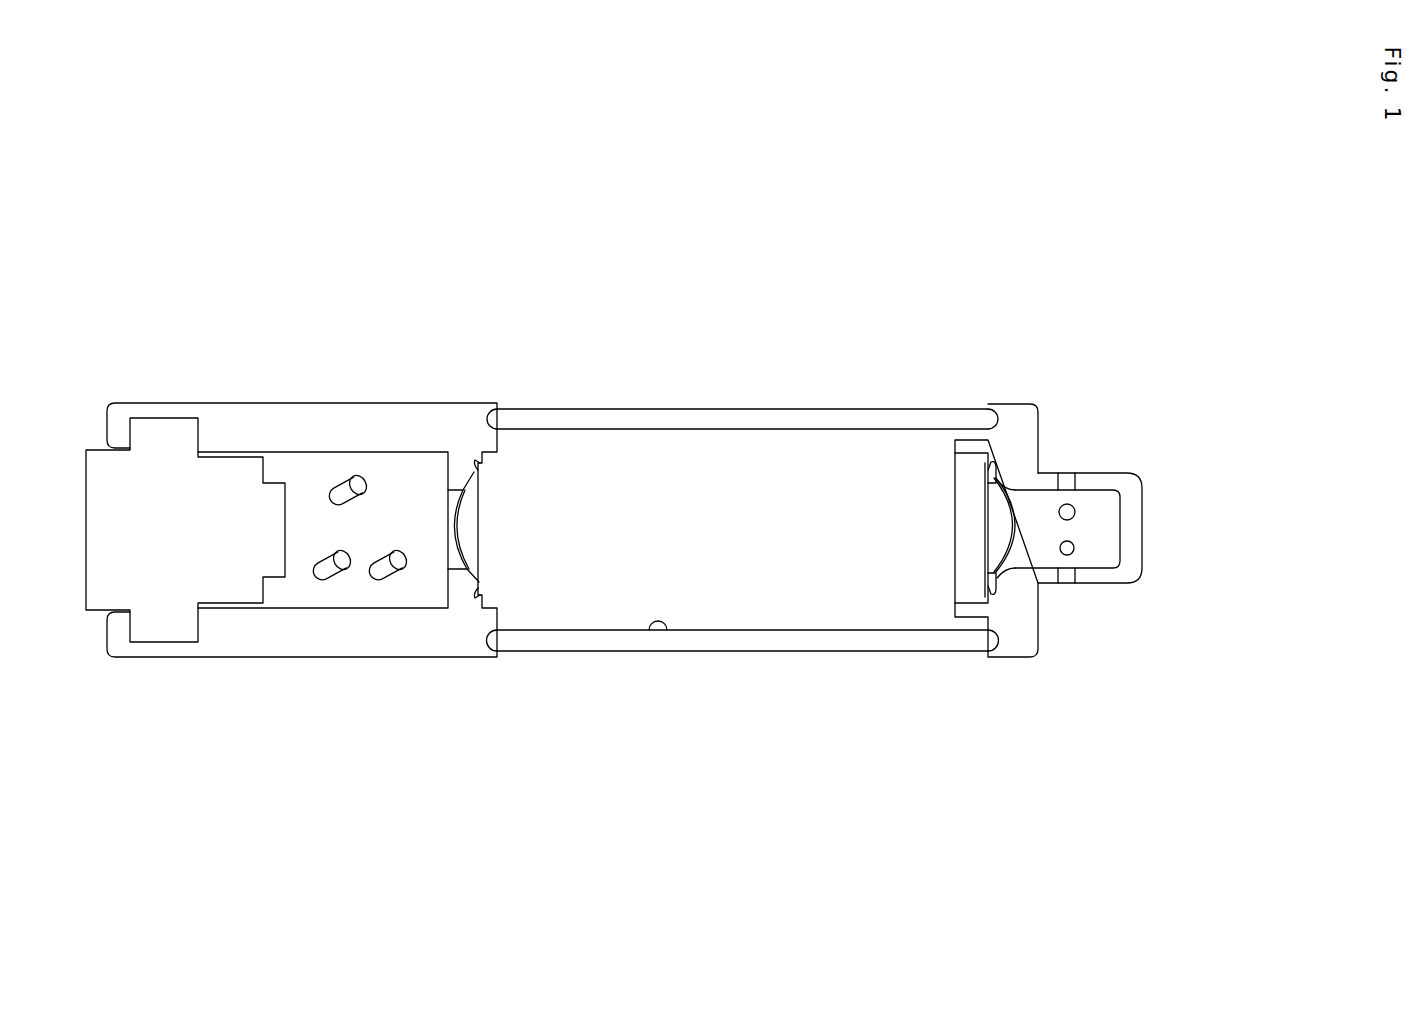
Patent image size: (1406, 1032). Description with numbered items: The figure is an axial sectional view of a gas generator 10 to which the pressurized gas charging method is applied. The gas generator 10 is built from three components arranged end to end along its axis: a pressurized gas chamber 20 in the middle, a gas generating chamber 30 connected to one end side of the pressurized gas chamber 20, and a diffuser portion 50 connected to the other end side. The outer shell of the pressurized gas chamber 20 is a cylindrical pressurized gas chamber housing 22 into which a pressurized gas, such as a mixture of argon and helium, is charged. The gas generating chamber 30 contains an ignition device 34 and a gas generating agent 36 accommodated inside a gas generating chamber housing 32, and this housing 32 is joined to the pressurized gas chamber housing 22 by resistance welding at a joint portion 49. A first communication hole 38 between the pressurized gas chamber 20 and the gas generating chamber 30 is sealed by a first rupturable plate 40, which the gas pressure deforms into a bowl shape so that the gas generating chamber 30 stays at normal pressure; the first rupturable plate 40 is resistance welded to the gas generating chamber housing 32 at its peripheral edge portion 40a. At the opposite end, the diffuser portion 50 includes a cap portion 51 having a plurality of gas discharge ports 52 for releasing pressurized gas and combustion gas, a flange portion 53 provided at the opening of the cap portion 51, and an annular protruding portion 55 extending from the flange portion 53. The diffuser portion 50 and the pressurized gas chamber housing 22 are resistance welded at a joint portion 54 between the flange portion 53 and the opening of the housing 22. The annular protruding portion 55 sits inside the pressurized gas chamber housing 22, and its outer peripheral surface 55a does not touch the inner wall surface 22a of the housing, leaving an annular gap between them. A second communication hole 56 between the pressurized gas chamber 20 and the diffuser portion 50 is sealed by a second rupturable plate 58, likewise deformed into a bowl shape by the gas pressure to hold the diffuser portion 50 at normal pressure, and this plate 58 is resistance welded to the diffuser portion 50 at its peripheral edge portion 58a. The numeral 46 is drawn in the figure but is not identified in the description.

The gas generator 10 is at (638, 353).
The pressurized gas chamber 20 is at (618, 537).
The pressurized gas chamber housing 22 is at (760, 409).
The inner wall surface 22a is at (668, 630).
The gas generating chamber 30 is at (237, 365).
The gas generating chamber housing 32 is at (337, 410).
The ignition device 34 is at (228, 588).
The gas generating agent 36 is at (317, 577).
The first communication hole 38 is at (455, 490).
The first rupturable plate 40 is at (452, 570).
The peripheral edge portion 40a is at (470, 572).
The retaining clip 46 is at (489, 463).
The joint portion 49 is at (480, 403).
The diffuser portion 50 is at (1053, 435).
The cap portion 51 is at (1132, 523).
The gas discharge ports 52 is at (1067, 578).
The flange portion 53 is at (1013, 410).
The joint portion 54 is at (997, 640).
The annular protruding portion 55 is at (953, 444).
The outer peripheral surface 55a is at (987, 578).
The second communication hole 56 is at (997, 523).
The second rupturable plate 58 is at (1013, 527).
The peripheral edge portion 58a is at (990, 470).